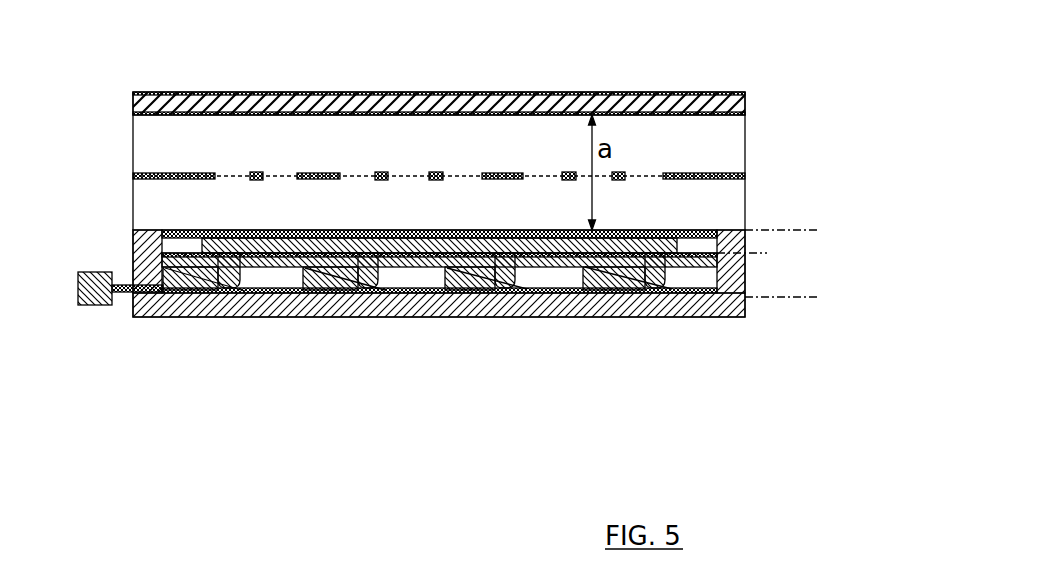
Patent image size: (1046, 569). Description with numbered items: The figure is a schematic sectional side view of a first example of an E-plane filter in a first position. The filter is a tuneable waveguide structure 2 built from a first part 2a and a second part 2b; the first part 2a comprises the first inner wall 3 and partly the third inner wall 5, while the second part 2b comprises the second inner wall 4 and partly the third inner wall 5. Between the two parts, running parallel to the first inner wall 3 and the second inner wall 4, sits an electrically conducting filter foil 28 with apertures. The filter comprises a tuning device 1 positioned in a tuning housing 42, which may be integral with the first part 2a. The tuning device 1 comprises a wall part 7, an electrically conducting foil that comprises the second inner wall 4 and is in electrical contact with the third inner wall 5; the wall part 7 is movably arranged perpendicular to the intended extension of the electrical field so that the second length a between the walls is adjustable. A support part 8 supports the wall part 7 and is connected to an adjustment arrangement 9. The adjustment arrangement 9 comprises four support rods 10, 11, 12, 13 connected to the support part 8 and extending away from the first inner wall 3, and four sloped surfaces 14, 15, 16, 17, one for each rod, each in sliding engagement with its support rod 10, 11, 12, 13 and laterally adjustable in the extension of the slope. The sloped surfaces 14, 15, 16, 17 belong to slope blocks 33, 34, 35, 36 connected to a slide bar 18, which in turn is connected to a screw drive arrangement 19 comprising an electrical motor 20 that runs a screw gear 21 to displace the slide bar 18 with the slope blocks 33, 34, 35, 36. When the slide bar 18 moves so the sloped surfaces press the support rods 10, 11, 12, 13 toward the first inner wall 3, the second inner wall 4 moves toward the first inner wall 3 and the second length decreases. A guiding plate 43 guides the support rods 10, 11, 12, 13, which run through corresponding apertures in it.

The tuning device 1 is at (816, 230).
The tuneable waveguide structure 2 is at (480, 72).
The first part 2a is at (272, 200).
The second part 2b is at (298, 127).
The first inner wall 3 is at (716, 119).
The second inner wall 4 is at (295, 228).
The third inner wall 5 is at (535, 192).
The wall part 7 is at (230, 229).
The support part 8 is at (438, 240).
The adjustment arrangement 9 is at (770, 253).
The support rod 10 is at (200, 290).
The support rod 11 is at (380, 280).
The support rod 12 is at (522, 285).
The support rod 13 is at (667, 275).
The sloped surface 14 is at (190, 240).
The sloped surface 15 is at (352, 266).
The sloped surface 16 is at (471, 266).
The sloped surface 17 is at (636, 272).
The slide bar 18 is at (262, 292).
The screw drive arrangement 19 is at (163, 315).
The electrical motor 20 is at (78, 293).
The screw gear 21 is at (133, 286).
The electrically conducting filter foil 28 is at (685, 173).
The slope block 33 is at (185, 278).
The slope block 34 is at (315, 292).
The slope block 35 is at (465, 275).
The slope block 36 is at (600, 276).
The tuning housing 42 is at (568, 303).
The guiding plate 43 is at (703, 265).